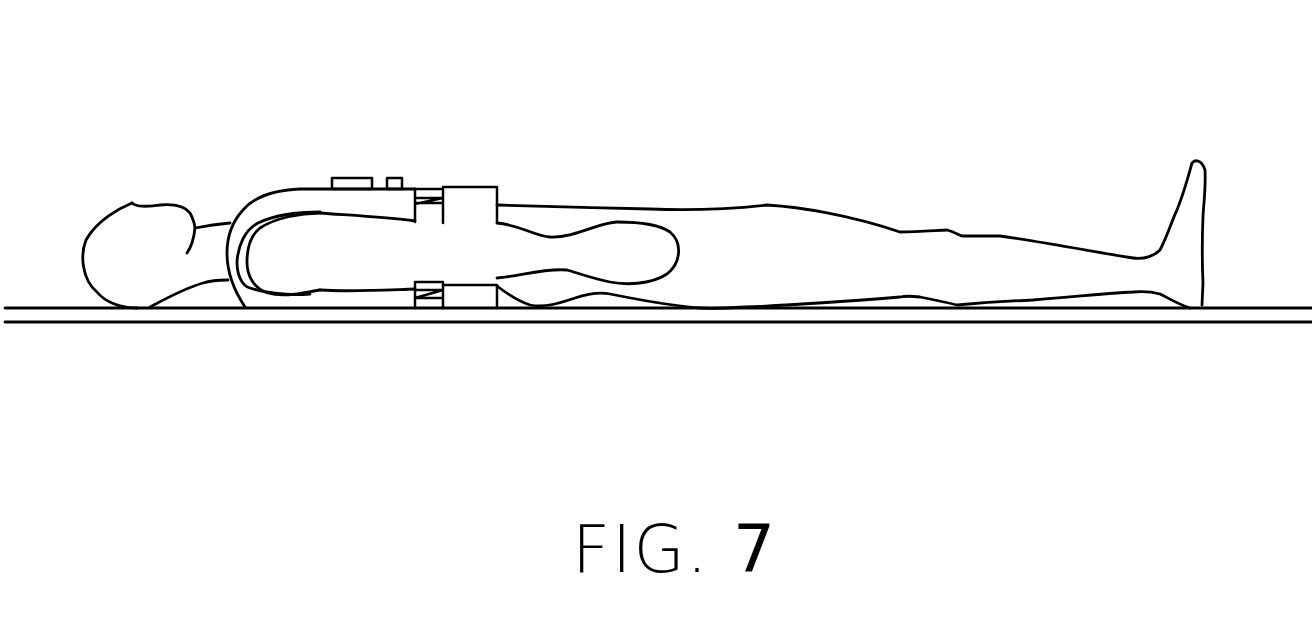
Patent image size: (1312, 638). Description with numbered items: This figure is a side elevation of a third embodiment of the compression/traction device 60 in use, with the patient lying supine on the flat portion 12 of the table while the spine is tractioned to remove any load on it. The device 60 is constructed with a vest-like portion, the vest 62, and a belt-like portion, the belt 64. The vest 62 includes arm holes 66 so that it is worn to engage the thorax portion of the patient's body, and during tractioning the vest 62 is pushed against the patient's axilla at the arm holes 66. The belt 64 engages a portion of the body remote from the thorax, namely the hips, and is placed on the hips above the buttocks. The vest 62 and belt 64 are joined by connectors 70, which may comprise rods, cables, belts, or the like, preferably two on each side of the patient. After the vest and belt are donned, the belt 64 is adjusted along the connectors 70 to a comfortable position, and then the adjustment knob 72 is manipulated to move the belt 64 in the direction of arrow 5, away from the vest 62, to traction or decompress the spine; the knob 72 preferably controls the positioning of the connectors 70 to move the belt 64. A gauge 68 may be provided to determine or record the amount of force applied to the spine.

The arrow 5 is at (400, 37).
The flat portion of the table 12 is at (73, 323).
The device 60 is at (413, 320).
The vest 62 is at (258, 194).
The belt 64 is at (496, 187).
The arm holes 66 is at (253, 288).
The gauge 68 is at (350, 178).
The connectors 70 is at (433, 189).
The adjustment knob 72 is at (396, 178).